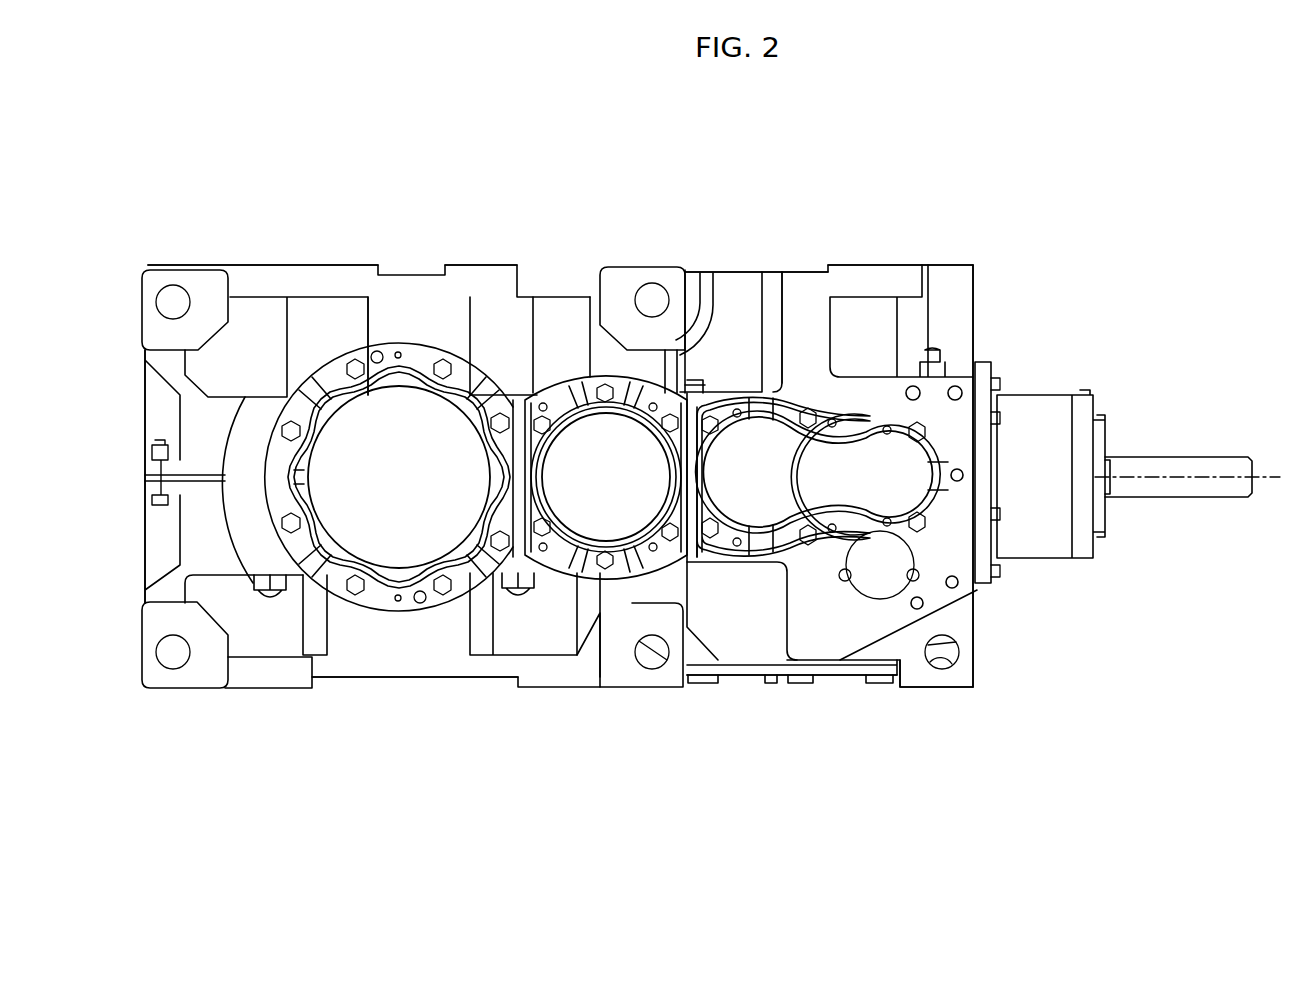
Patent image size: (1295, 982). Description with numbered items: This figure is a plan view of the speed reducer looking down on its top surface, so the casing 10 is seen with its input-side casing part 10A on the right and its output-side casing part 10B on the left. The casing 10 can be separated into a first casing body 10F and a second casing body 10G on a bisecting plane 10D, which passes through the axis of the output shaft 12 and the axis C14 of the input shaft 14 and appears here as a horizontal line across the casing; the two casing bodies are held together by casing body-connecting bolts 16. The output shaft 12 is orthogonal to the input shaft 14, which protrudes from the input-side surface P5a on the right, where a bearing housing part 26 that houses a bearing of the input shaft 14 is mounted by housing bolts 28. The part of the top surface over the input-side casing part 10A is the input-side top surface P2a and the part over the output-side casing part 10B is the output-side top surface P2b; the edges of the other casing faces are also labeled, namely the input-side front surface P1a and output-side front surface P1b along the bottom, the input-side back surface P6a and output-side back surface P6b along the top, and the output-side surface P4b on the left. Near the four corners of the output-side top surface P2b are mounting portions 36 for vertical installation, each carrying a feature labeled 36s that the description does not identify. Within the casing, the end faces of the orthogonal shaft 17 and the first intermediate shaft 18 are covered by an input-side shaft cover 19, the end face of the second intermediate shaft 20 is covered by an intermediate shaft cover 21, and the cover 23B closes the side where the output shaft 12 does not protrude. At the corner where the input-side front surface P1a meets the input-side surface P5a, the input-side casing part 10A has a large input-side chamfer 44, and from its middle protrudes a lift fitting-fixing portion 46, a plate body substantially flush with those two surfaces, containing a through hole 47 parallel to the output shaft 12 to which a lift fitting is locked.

The casing 10 is at (876, 176).
The input-side casing part 10A is at (788, 262).
The output-side casing part 10B is at (368, 262).
The bisecting plane 10D is at (200, 480).
The first casing body 10F is at (143, 540).
The second casing body 10G is at (143, 383).
The output shaft 12 is at (400, 508).
The input shaft 14 is at (1155, 458).
The casing body-connecting bolts 16 is at (152, 488).
The orthogonal shaft 17 is at (877, 492).
The first intermediate shaft 18 is at (766, 528).
The input-side shaft cover 19 is at (823, 502).
The second intermediate shaft 20 is at (573, 568).
The intermediate shaft cover 21 is at (628, 515).
The cover 23B is at (425, 530).
The bearing housing part 26 is at (1040, 546).
The housing bolts 28 is at (998, 417).
The mounting portions for vertical installation 36 is at (232, 285).
The mounting hole 36s is at (180, 297).
The input-side chamfer 44 is at (907, 632).
The lift fitting-fixing portion 46 is at (962, 678).
The through hole 47 is at (938, 668).
The axis of the input shaft C14 is at (1270, 476).
The input-side front surface P1a is at (748, 688).
The output-side front surface P1b is at (350, 680).
The input-side top surface P2a is at (826, 339).
The output-side top surface P2b is at (438, 329).
The output-side surface P4b is at (143, 430).
The input-side surface P5a is at (985, 322).
The input-side back surface P6a is at (848, 265).
The output-side back surface P6b is at (486, 265).